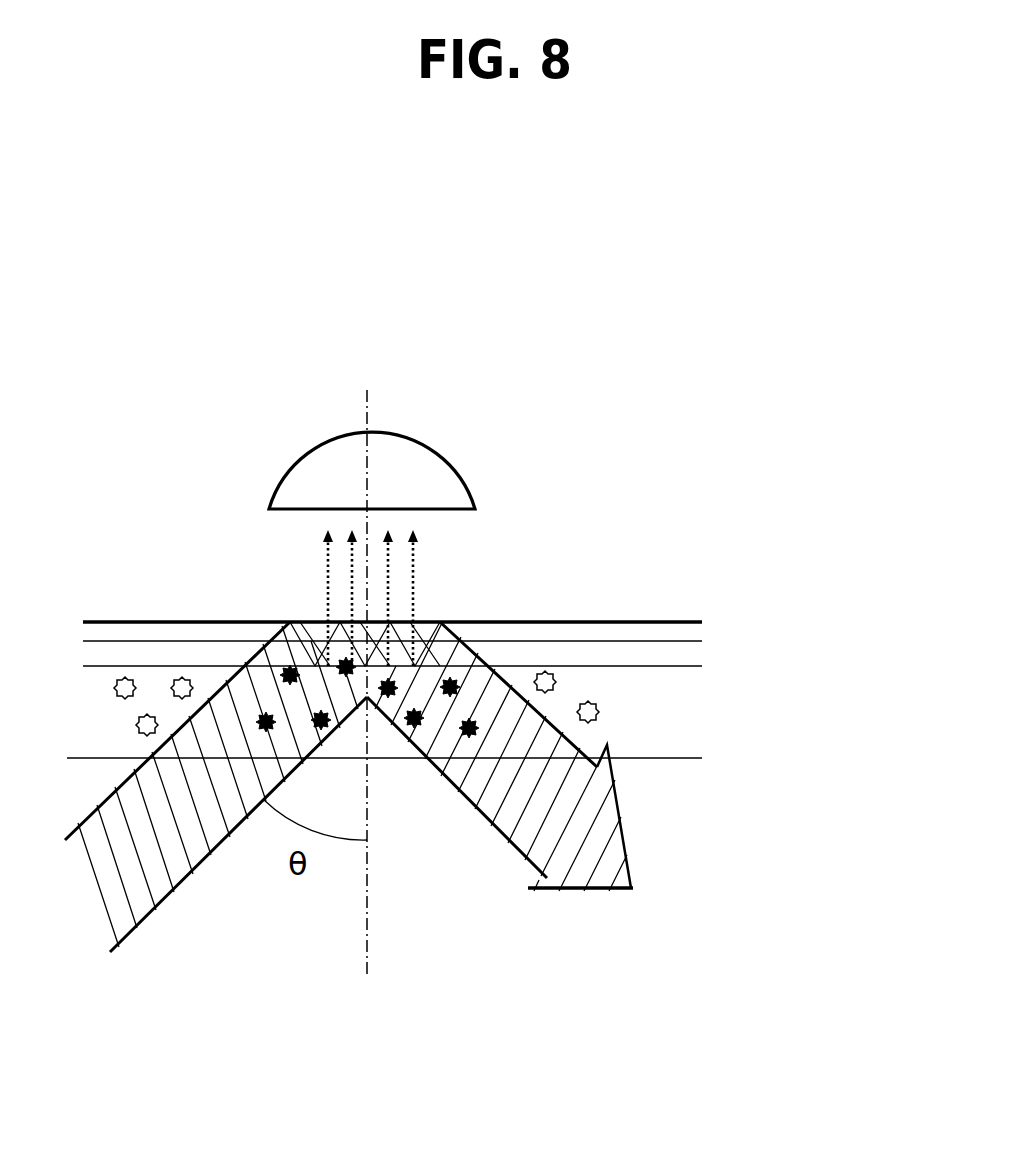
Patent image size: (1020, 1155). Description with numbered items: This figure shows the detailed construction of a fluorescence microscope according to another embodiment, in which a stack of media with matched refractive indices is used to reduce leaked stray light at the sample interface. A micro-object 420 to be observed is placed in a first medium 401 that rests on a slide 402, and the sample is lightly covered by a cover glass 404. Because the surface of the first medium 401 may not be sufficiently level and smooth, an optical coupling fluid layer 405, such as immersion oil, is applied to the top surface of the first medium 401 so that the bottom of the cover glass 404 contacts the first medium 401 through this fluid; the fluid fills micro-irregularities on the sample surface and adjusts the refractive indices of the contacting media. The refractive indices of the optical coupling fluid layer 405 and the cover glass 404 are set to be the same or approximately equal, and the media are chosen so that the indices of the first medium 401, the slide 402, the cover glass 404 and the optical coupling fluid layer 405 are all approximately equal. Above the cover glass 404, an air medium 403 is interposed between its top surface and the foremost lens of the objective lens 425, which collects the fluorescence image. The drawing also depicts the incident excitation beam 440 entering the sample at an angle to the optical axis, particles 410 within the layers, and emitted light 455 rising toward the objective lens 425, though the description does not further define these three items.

The first medium 401 is at (697, 743).
The slide 402 is at (700, 830).
The air medium 403 is at (650, 577).
The cover glass 404 is at (680, 632).
The optical coupling fluid layer 405 is at (680, 655).
The analyte particles 410 is at (130, 680).
The micro-object 420 is at (453, 743).
The objective lens 425 is at (458, 459).
The incident light beam 440 is at (163, 903).
The emitted fluorescence light 455 is at (325, 567).